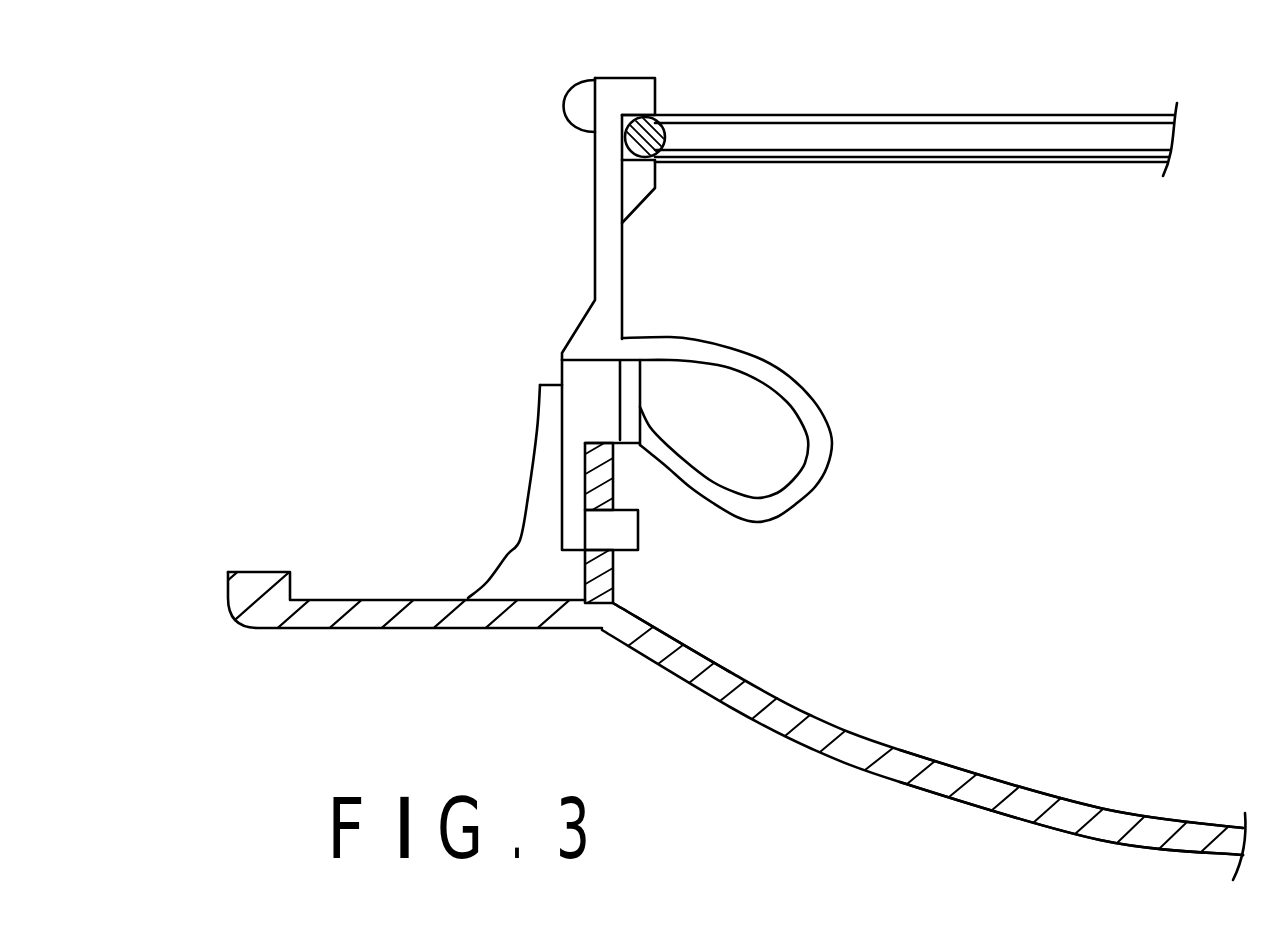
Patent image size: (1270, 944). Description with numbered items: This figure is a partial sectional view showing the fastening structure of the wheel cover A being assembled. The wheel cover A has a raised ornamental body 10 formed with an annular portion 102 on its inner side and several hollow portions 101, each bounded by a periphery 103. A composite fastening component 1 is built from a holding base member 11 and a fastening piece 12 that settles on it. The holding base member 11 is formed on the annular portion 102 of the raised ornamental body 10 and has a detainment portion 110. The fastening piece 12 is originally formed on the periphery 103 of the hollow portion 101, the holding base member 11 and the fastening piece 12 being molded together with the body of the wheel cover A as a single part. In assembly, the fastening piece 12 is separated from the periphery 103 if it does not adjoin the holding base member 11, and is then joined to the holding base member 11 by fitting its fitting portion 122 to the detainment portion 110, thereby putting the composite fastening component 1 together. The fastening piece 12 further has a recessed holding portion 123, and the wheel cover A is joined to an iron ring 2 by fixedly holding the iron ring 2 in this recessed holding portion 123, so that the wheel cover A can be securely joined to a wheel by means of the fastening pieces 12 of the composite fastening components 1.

The composite fastening component 1 is at (523, 98).
The iron ring 2 is at (924, 135).
The raised ornamental body 10 is at (795, 738).
The holding base member 11 is at (527, 557).
The fastening piece 12 is at (605, 208).
The hollow portion 101 is at (972, 698).
The annular portion 102 is at (617, 600).
The periphery 103 is at (975, 797).
The detainment portion 110 is at (580, 558).
The fitting portion 122 is at (620, 530).
The recessed holding portion 123 is at (660, 128).
The wheel cover A is at (333, 642).